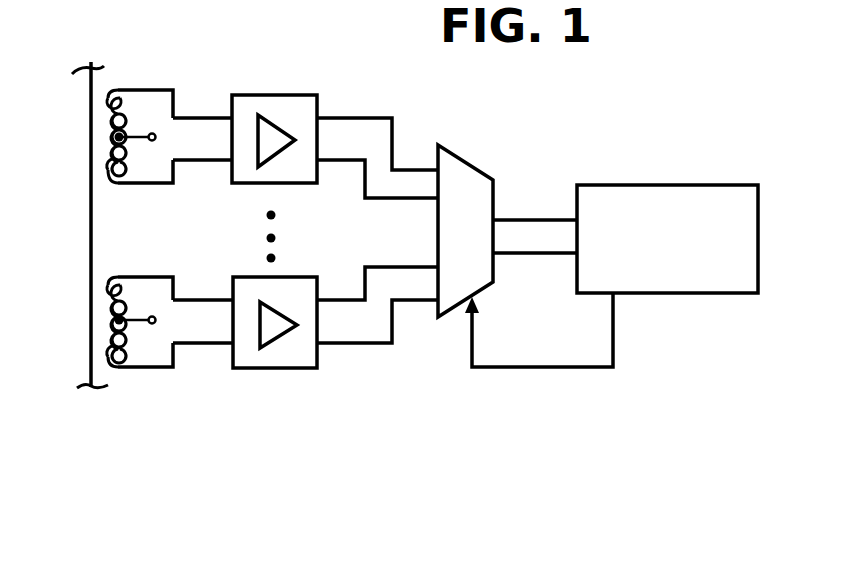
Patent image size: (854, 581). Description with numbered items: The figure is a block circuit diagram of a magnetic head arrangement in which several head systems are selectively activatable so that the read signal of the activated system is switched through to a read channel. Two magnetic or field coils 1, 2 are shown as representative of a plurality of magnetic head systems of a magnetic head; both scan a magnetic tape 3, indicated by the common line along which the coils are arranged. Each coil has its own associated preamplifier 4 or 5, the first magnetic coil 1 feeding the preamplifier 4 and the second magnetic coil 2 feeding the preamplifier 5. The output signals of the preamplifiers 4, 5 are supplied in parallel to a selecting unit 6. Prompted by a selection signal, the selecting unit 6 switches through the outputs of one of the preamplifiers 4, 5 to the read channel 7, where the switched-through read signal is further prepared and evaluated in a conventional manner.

The magnetic coil 1 is at (110, 128).
The magnetic coil 2 is at (112, 312).
The magnetic tape 3 is at (91, 235).
The preamplifier 4 is at (289, 95).
The preamplifier 5 is at (290, 369).
The selecting unit 6 is at (461, 161).
The read channel 7 is at (638, 185).